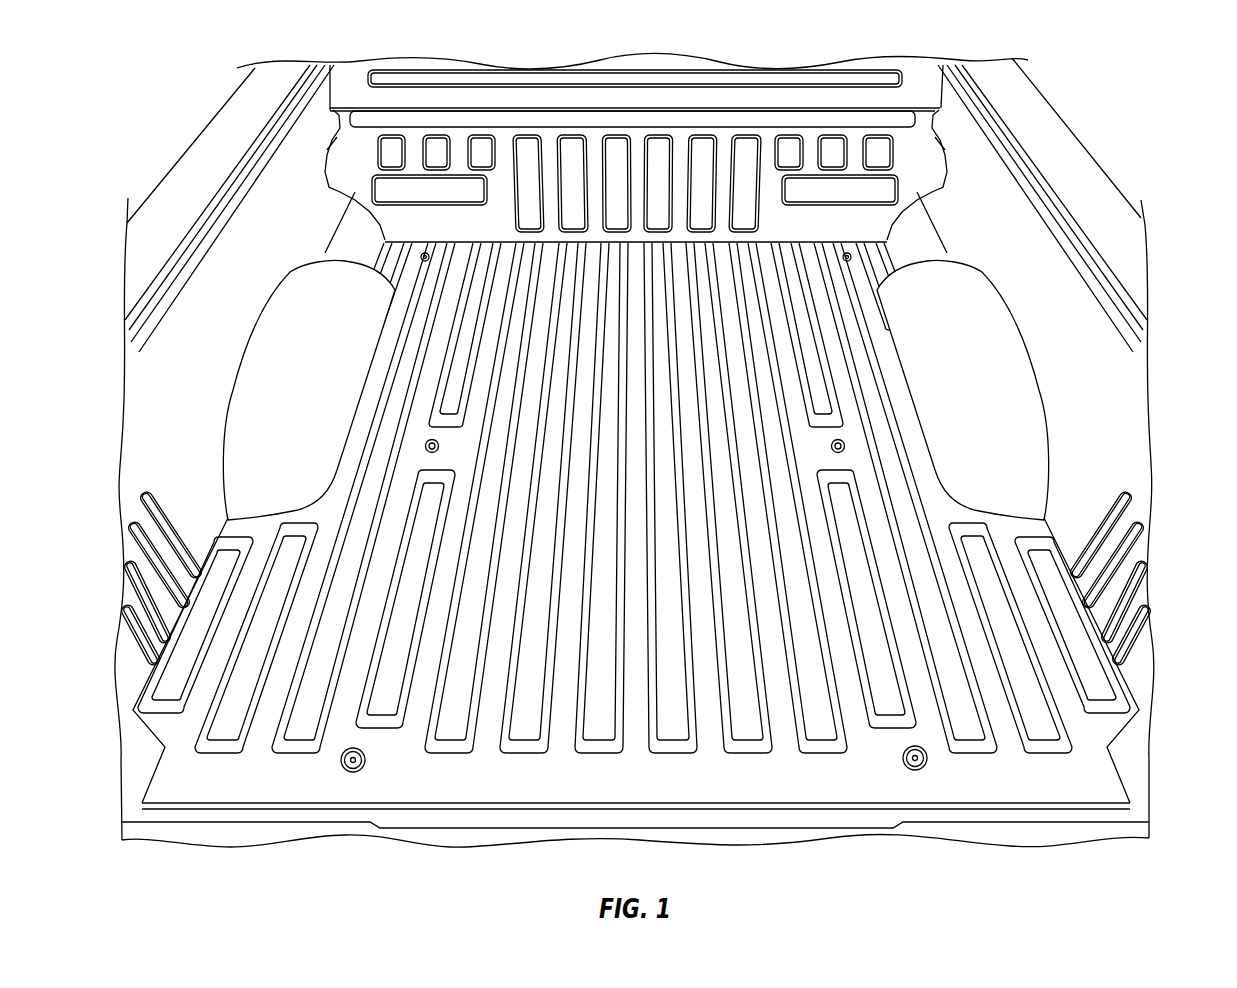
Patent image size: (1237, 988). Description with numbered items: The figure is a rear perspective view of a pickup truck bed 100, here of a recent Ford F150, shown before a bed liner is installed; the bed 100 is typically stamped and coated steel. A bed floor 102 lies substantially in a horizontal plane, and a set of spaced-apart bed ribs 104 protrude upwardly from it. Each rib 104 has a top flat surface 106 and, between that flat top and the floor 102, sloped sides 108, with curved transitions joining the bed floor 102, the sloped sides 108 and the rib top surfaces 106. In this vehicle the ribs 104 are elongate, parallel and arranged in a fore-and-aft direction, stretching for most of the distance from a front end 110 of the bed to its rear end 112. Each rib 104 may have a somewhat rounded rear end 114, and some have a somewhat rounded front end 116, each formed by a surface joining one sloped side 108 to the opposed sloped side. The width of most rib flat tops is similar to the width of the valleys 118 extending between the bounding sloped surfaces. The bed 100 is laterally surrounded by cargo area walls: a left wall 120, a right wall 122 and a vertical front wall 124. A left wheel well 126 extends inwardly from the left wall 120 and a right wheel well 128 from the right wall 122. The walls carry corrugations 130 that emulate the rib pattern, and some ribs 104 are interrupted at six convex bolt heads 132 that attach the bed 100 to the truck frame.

The bed 100 is at (1022, 846).
The bed floor 102 is at (634, 498).
The bed ribs 104 is at (565, 295).
The top flat surface 106 is at (567, 348).
The sloped sides 108 is at (596, 405).
The front end 110 is at (770, 243).
The rear end 112 is at (728, 808).
The rounded rear end 114 is at (210, 748).
The rounded front end 116 is at (303, 527).
The valleys 118 is at (690, 410).
The left wall 120 is at (190, 433).
The right wall 122 is at (1135, 408).
The front wall 124 is at (545, 147).
The left wheel well 126 is at (320, 365).
The right wheel well 128 is at (1015, 362).
The corrugations 130 is at (612, 143).
The convex bolt heads 132 is at (420, 257).